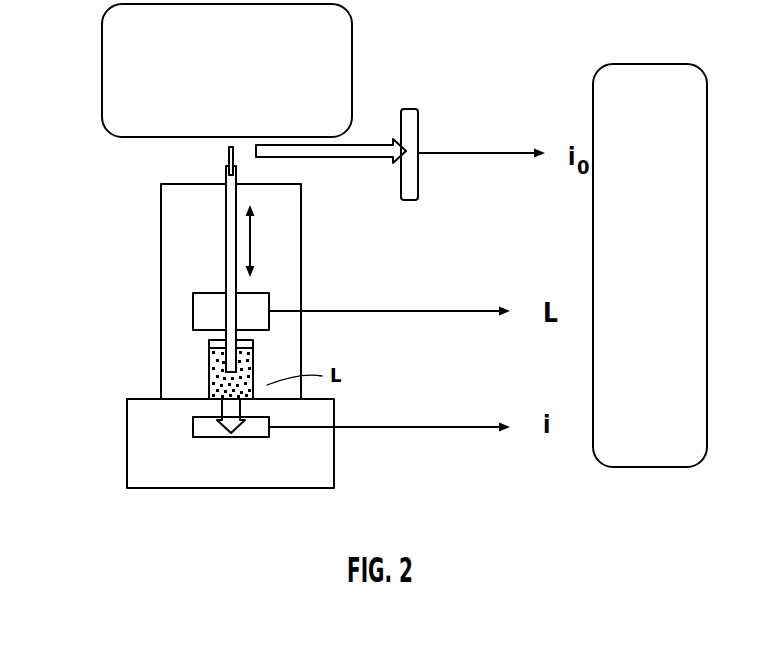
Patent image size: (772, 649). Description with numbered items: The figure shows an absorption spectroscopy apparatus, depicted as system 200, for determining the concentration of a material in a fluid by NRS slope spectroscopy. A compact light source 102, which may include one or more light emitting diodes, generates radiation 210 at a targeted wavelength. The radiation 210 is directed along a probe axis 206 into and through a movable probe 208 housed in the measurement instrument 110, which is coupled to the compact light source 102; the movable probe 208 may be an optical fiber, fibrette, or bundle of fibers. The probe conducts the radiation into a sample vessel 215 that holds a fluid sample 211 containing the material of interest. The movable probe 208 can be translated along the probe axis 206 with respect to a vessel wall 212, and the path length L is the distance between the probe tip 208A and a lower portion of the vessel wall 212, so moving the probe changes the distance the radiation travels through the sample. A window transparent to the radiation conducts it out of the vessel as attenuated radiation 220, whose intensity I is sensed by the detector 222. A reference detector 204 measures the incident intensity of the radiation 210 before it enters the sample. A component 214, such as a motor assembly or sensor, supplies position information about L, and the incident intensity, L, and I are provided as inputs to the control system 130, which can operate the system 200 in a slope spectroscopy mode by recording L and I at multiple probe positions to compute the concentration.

The compact light source 102 is at (107, 62).
The control system 130 is at (665, 274).
The measurement instrument 110 is at (300, 289).
The system 200 is at (373, 529).
The detector 222 is at (200, 427).
The component 214 is at (186, 311).
The fluid sample 211 is at (207, 355).
The sample vessel 215 is at (206, 369).
The movable probe 208 is at (220, 238).
The probe tip 208A is at (240, 369).
The radiation 210 is at (229, 155).
The probe axis 206 is at (250, 238).
The reference detector 204 is at (418, 190).
The vessel wall 212 is at (213, 403).
The attenuated radiation 220 is at (240, 410).